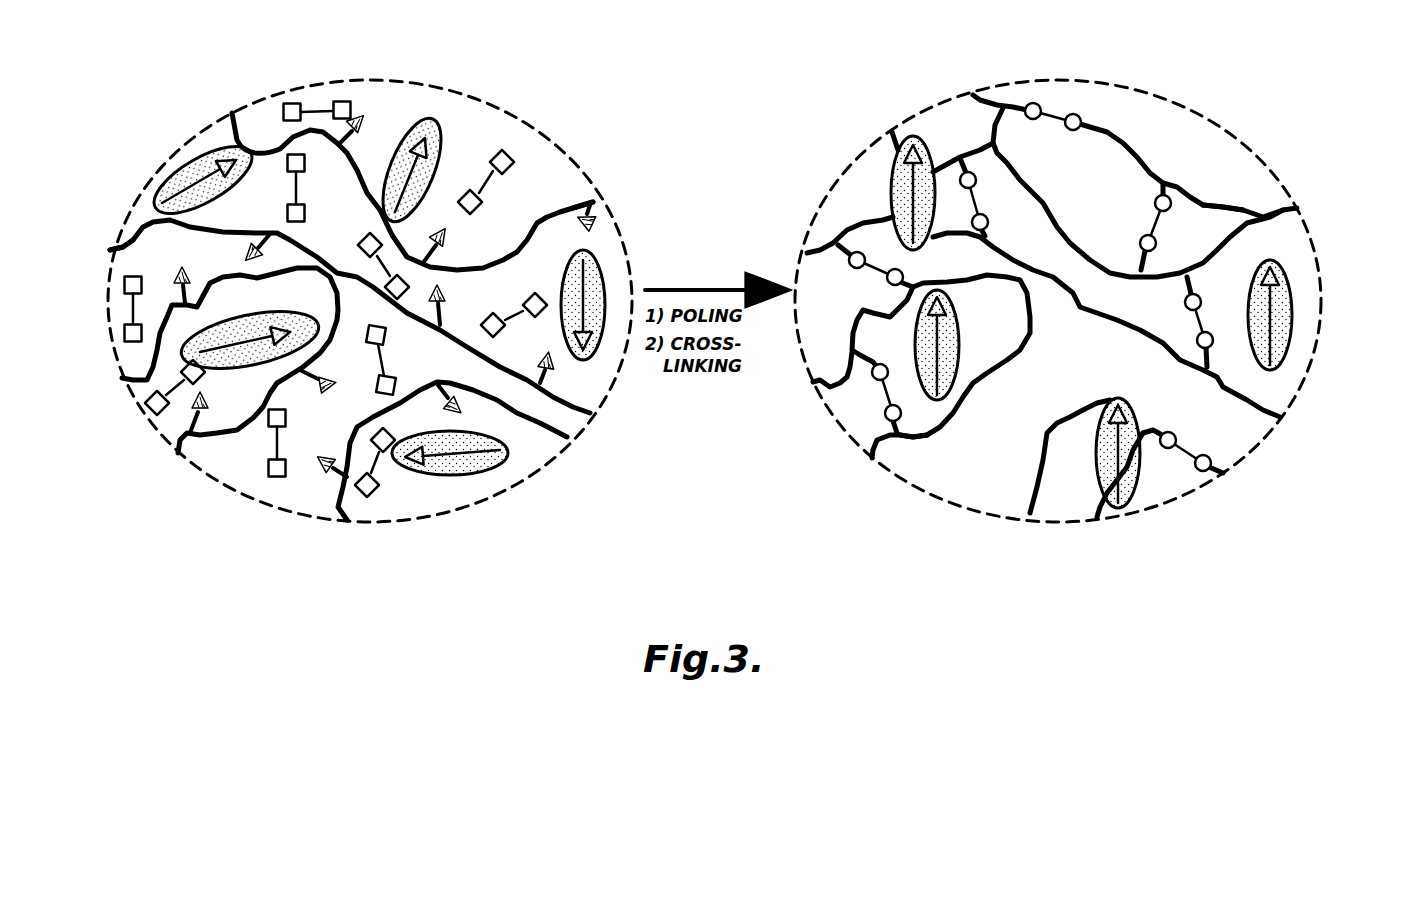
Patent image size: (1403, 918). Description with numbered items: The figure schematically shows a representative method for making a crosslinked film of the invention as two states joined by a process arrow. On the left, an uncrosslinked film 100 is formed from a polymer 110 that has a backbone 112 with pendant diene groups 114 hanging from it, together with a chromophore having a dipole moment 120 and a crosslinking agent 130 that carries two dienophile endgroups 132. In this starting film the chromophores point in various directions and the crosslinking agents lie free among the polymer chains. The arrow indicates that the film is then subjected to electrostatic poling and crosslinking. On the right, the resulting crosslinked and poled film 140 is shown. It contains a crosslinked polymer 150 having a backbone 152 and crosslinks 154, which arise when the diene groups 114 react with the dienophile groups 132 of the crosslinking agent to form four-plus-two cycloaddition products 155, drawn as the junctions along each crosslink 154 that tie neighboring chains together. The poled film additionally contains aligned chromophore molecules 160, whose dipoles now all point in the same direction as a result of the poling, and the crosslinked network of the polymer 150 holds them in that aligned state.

The uncrosslinked film 100 is at (520, 100).
The polymer 110 is at (146, 221).
The backbone 112 is at (118, 250).
The pendant diene groups 114 is at (361, 116).
The chromophore having a dipole moment 120 is at (190, 160).
The crosslinking agent 130 is at (289, 101).
The dienophile endgroups 132 is at (343, 101).
The crosslinked and poled film 140 is at (1195, 90).
The crosslinked polymer 150 is at (1175, 162).
The backbone 152 is at (1223, 207).
The crosslinks 154 is at (1053, 116).
The 4+2 cycloaddition products 155 is at (1078, 114).
The aligned chromophore molecules 160 is at (908, 128).